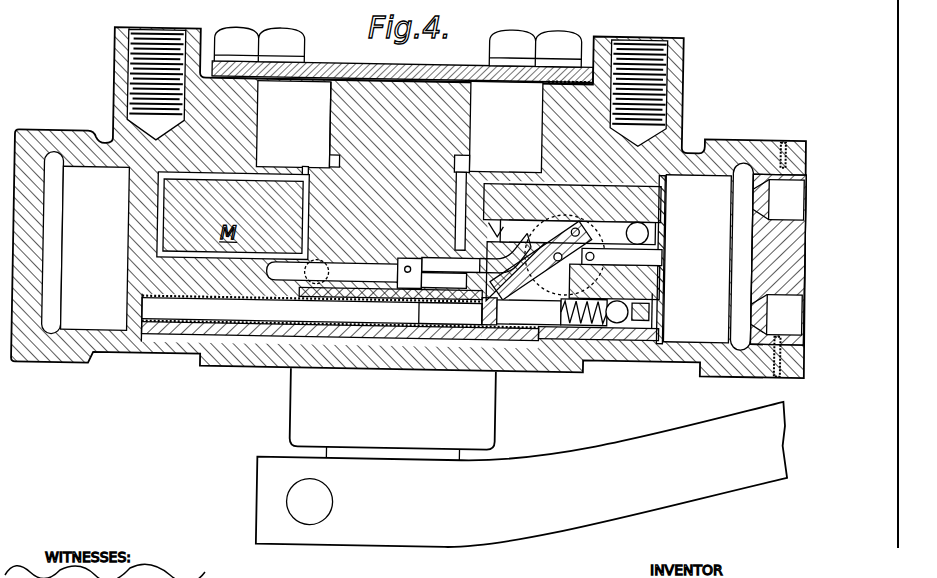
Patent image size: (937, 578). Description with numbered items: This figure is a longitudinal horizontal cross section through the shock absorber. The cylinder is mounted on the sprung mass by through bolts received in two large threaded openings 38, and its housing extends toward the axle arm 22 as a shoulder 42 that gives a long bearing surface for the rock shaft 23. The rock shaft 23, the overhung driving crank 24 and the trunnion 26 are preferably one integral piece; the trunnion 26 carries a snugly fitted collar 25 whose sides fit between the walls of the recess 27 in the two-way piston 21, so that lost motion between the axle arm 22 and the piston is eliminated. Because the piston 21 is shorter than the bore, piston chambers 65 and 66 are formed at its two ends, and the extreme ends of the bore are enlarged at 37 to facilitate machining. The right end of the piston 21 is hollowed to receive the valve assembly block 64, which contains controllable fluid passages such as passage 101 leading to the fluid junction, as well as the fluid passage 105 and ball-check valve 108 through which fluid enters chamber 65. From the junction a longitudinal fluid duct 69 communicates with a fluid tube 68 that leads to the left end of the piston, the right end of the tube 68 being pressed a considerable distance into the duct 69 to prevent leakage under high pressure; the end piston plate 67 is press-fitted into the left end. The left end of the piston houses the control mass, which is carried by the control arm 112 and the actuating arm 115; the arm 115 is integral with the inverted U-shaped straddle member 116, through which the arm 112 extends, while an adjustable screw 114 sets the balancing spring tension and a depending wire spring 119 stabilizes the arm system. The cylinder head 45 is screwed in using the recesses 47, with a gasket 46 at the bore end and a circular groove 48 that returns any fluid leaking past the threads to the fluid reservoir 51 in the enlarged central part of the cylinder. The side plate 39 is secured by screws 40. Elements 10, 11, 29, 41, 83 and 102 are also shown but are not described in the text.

The collar 10 is at (489, 311).
The lever 11 is at (548, 258).
The two-way piston 21 is at (173, 338).
The axle arm 22 is at (551, 540).
The rock shaft 23 is at (495, 452).
The driving crank 24 is at (470, 117).
The collar 25 is at (458, 165).
The trunnion 26 is at (332, 162).
The recess 27 is at (318, 208).
The casing 29 is at (100, 140).
The enlarged bore ends 37 is at (52, 160).
The threaded openings 38 is at (160, 34).
The side plate 39 is at (440, 66).
The screws 40 is at (279, 32).
The gasket 41 is at (580, 79).
The shoulder 42 is at (499, 392).
The cylinder head 45 is at (790, 137).
The gasket 46 is at (782, 138).
The recesses 47 is at (795, 203).
The circular groove 48 is at (778, 352).
The fluid reservoir 51 is at (278, 121).
The valve assembly block 64 is at (569, 203).
The piston chamber 65 is at (689, 293).
The piston chamber 66 is at (83, 238).
The end piston plate 67 is at (120, 340).
The fluid tube 68 is at (200, 333).
The fluid duct 69 is at (384, 309).
The bar 83 is at (658, 255).
The fluid passage 101 is at (529, 312).
The ball 102 is at (625, 322).
The fluid passage 105 is at (509, 240).
The ball-check valve 108 is at (638, 220).
The control arm 112 is at (372, 270).
The adjustable screw 114 is at (317, 260).
The actuating arm 115 is at (443, 281).
The inverted U-shaped straddle member 116 is at (425, 300).
The wire spring 119 is at (406, 266).